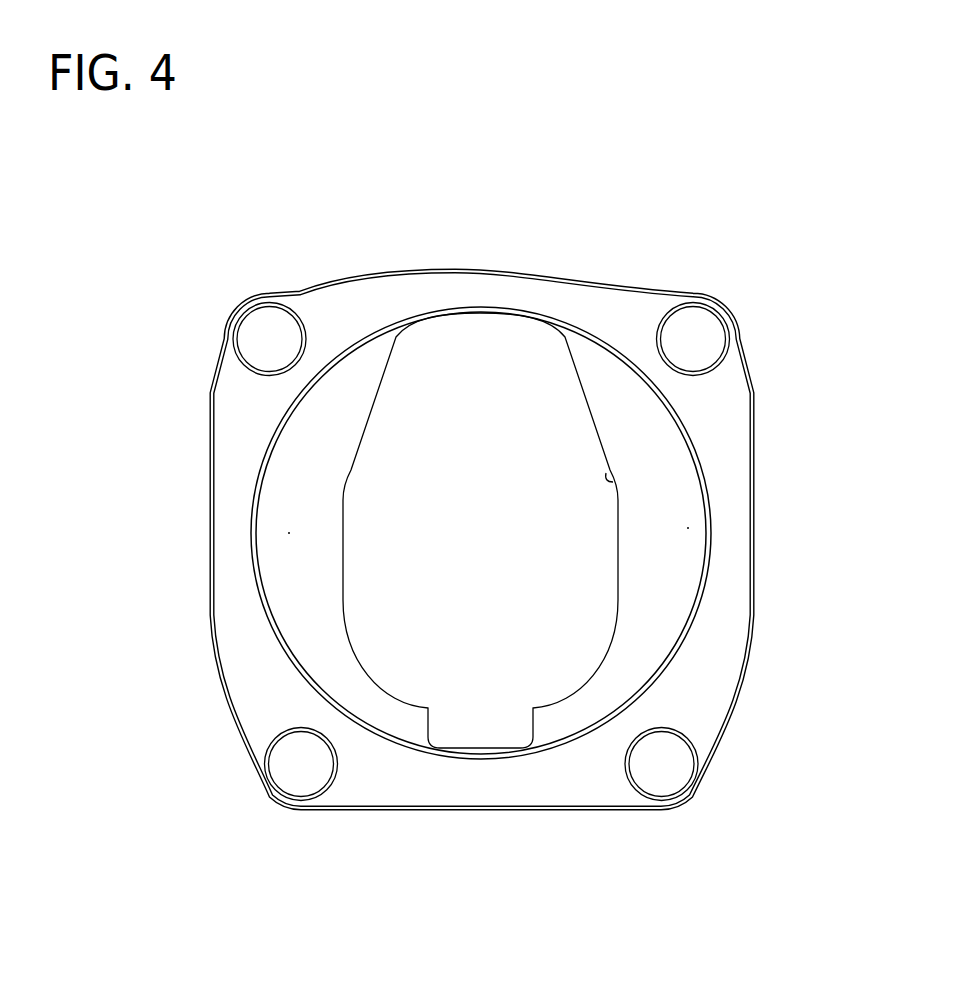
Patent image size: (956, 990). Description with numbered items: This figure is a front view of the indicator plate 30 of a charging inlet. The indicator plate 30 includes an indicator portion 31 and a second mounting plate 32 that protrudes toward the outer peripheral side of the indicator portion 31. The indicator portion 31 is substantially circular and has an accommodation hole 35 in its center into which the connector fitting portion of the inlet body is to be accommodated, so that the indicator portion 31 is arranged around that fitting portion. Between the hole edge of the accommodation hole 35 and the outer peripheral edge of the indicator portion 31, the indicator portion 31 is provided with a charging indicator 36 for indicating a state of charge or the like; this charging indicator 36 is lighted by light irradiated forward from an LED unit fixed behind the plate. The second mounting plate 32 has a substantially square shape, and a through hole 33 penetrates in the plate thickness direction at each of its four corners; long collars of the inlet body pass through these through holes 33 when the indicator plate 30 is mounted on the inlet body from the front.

The indicator plate 30 is at (487, 191).
The indicator portion 31 is at (607, 340).
The second mounting plate 32 is at (555, 288).
The through hole 33 is at (262, 315).
The accommodation hole 35 is at (615, 483).
The charging indicator 36 is at (288, 533).